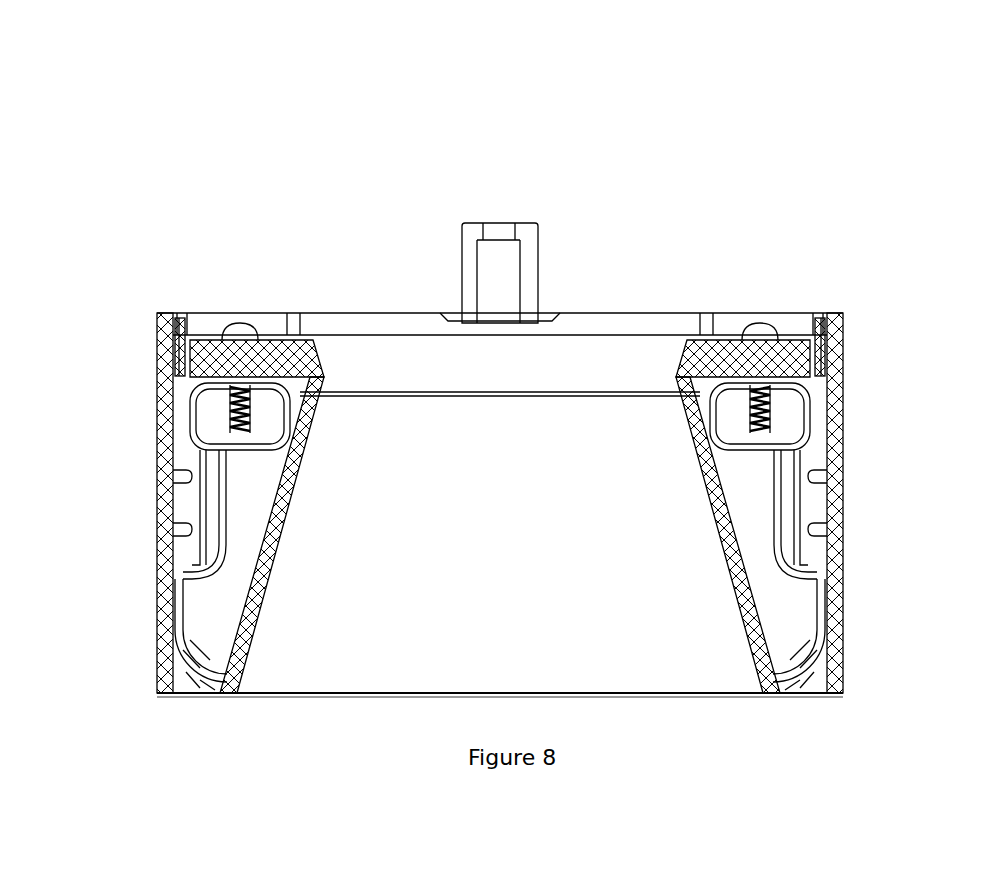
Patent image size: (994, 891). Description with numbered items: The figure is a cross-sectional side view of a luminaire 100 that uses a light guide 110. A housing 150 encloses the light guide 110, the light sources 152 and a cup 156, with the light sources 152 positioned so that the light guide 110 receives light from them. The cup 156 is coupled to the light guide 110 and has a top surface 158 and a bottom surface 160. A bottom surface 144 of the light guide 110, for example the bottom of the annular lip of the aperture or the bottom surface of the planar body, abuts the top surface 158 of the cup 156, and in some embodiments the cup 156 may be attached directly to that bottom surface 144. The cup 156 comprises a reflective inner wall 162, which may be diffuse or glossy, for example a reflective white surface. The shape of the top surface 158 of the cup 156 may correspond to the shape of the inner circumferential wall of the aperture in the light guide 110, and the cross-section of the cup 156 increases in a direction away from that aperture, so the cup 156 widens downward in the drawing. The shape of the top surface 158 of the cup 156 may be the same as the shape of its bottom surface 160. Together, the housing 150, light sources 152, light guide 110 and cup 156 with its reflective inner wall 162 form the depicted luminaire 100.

The luminaire 100 is at (256, 132).
The light guide 110 is at (316, 346).
The bottom surface of light guide 144 is at (368, 392).
The housing 150 is at (157, 500).
The light sources 152 is at (156, 314).
The cup 156 is at (728, 643).
The top surface of cup 158 is at (367, 397).
The bottom surface of cup 160 is at (370, 694).
The reflective inner wall 162 is at (264, 583).